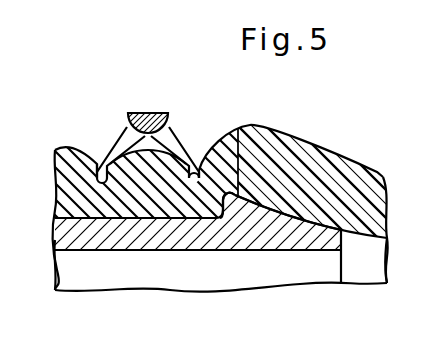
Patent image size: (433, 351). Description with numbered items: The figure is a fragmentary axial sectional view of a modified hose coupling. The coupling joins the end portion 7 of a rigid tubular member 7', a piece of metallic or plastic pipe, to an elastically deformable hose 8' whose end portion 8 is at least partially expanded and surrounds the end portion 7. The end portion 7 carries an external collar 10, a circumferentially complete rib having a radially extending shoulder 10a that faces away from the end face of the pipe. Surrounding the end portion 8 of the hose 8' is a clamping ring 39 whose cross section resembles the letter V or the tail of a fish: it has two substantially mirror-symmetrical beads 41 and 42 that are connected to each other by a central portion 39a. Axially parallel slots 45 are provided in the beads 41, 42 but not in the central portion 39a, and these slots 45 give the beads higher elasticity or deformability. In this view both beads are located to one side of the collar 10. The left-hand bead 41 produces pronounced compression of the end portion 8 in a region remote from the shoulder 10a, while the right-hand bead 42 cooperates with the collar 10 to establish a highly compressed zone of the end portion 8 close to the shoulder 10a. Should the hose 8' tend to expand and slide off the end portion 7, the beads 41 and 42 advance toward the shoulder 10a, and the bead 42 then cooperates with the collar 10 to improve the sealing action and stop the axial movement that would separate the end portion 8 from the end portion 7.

The end portion of the pipe 7 is at (218, 224).
The rigid tubular member 7' is at (43, 293).
The end portion of the hose 8 is at (294, 198).
The hose 8' is at (394, 294).
The collar 10 is at (240, 194).
The shoulder 10a is at (232, 198).
The clamping ring 39 is at (147, 111).
The central portion 39a is at (159, 113).
The left-hand bead 41 is at (97, 165).
The right-hand bead 42 is at (201, 158).
The axially parallel slots 45 is at (123, 140).